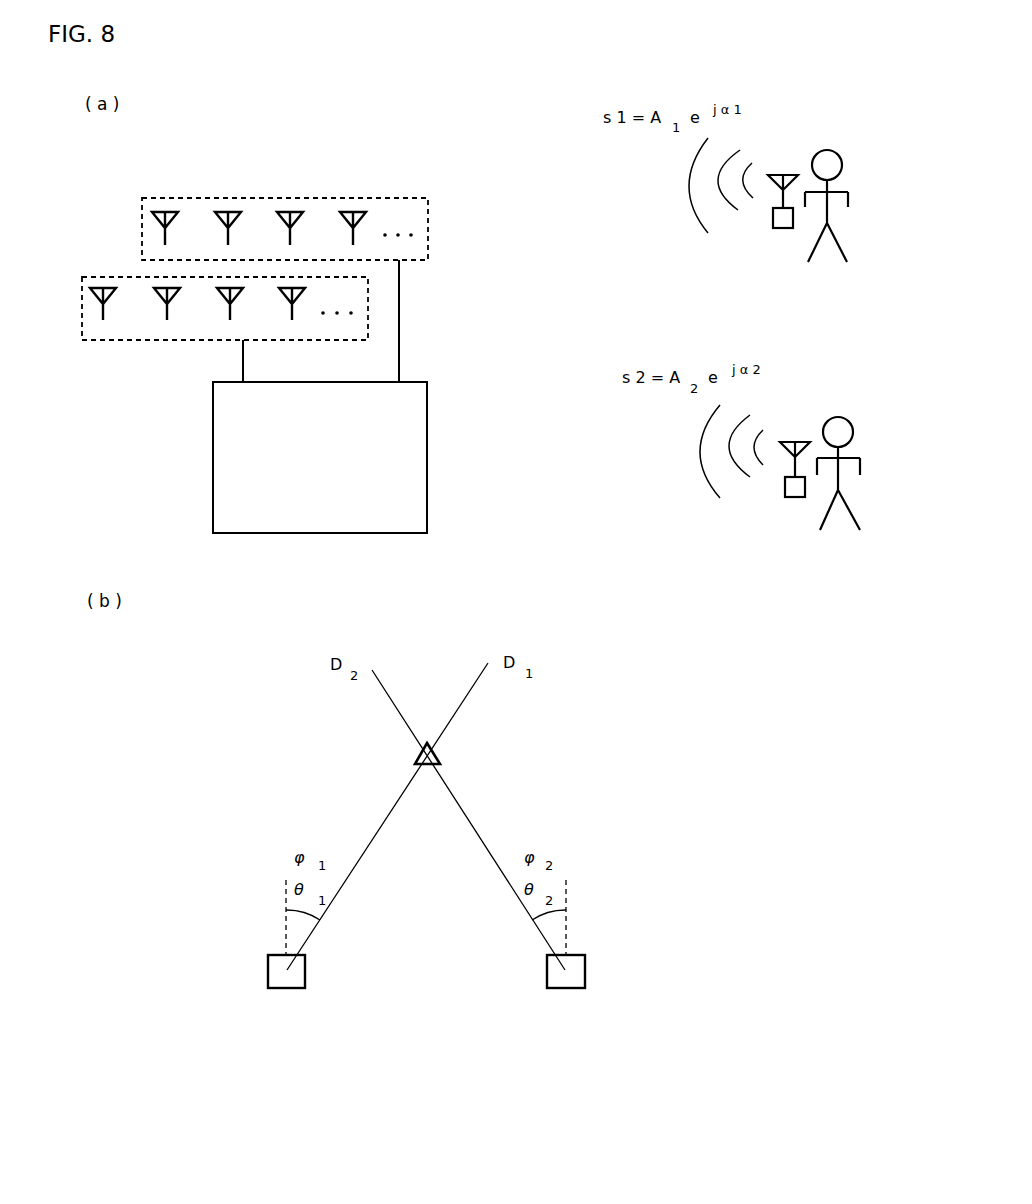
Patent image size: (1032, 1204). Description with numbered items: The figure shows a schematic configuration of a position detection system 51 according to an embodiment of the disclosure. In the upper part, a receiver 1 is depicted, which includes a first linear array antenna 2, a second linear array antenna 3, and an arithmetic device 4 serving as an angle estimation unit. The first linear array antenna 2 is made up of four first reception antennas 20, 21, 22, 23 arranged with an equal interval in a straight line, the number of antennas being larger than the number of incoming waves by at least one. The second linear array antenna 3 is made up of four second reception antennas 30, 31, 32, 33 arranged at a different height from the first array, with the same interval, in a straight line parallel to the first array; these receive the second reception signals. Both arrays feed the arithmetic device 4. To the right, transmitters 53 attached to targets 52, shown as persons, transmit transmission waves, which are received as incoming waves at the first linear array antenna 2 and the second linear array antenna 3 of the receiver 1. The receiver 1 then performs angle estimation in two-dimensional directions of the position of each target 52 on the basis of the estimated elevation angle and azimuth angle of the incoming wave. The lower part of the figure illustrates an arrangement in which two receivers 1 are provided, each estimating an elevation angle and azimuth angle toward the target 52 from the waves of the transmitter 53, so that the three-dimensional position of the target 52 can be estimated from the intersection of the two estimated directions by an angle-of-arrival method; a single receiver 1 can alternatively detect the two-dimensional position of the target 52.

The receiver 1 is at (458, 320).
The first linear array antenna 2 is at (103, 277).
The second linear array antenna 3 is at (200, 198).
The arithmetic device 4 is at (213, 455).
The first reception antenna 20 is at (111, 310).
The first reception antenna 21 is at (175, 310).
The first reception antenna 22 is at (238, 310).
The first reception antenna 23 is at (300, 310).
The second reception antenna 30 is at (173, 234).
The second reception antenna 31 is at (236, 234).
The second reception antenna 32 is at (298, 234).
The second reception antenna 33 is at (361, 234).
The position detection system 51 is at (405, 131).
The target 52 is at (832, 150).
The transmitter 53 is at (787, 229).